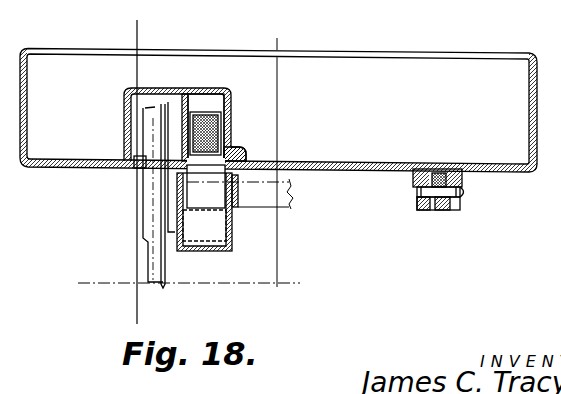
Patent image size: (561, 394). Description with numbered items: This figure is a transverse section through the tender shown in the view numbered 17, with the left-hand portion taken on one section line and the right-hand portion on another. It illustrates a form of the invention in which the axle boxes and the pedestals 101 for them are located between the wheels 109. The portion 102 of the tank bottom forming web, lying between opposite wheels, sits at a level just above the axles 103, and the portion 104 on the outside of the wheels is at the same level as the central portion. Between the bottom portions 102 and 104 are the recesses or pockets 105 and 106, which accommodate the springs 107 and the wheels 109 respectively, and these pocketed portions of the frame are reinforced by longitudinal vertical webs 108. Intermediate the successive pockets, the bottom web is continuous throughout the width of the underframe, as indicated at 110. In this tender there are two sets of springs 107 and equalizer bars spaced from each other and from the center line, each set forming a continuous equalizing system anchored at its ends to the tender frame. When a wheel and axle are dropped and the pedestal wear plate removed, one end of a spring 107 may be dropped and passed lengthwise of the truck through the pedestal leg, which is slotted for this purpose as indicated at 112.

The section line 17- 17 is at (133, 26).
The pedestal 101 is at (233, 240).
The tank bottom portion 102 is at (267, 160).
The axle 103 is at (292, 186).
The tank bottom portion 104 is at (94, 160).
The recess or pocket 105 is at (205, 104).
The recess or pocket 106 is at (188, 72).
The spring 107 is at (247, 112).
The longitudinal vertical web 108 is at (183, 135).
The wheel 109 is at (170, 273).
The continuous bottom web 110 is at (414, 148).
The slot 112 is at (208, 192).